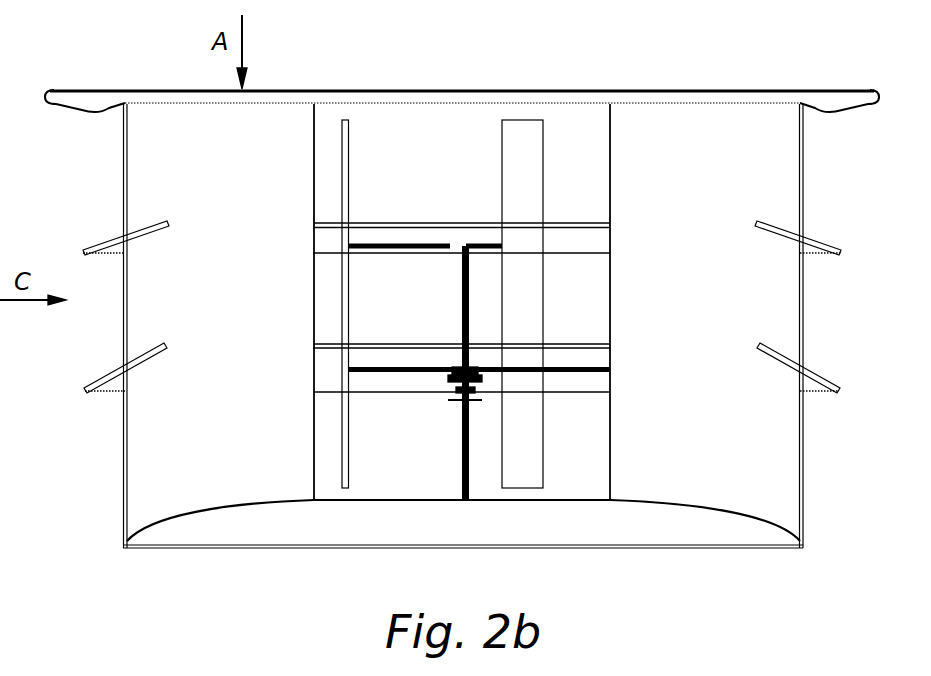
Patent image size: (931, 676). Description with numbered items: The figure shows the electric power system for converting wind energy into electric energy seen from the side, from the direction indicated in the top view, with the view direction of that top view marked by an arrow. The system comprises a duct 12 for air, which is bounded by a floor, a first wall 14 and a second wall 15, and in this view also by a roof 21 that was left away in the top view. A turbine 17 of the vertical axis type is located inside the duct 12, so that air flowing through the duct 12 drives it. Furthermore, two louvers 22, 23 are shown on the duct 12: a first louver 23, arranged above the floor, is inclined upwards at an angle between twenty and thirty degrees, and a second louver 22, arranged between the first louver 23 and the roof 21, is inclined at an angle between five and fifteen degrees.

The duct 12 is at (676, 530).
The first wall 14 is at (712, 194).
The second wall 15 is at (244, 194).
The turbine 17 is at (407, 245).
The roof 21 is at (710, 97).
The second louver 22 is at (105, 245).
The first louver 23 is at (105, 380).